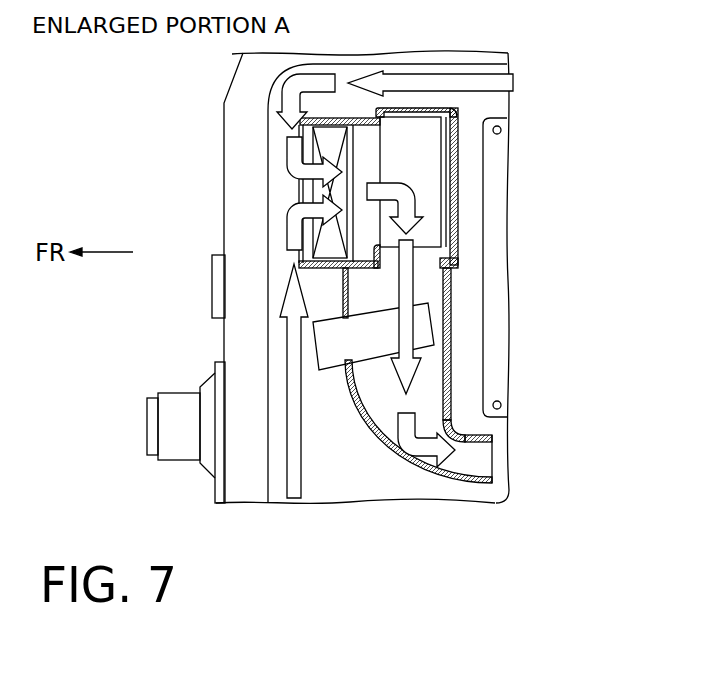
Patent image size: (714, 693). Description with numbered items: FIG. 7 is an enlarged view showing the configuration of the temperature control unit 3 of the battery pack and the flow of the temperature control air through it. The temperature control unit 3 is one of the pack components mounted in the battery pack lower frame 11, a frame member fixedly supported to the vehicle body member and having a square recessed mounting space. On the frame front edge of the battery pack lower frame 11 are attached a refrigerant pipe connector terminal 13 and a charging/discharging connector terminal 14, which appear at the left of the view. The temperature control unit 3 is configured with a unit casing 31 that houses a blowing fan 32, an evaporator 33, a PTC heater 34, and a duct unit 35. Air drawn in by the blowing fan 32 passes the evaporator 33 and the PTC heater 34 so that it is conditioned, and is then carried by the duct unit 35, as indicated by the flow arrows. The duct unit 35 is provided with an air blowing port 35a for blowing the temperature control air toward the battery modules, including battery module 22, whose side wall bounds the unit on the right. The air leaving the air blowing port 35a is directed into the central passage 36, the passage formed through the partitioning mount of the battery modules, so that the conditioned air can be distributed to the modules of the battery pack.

The temperature control unit 3 is at (460, 206).
The battery pack lower frame 11 is at (240, 93).
The refrigerant pipe connector terminal 13 is at (216, 300).
The charging/discharging connector terminal 14 is at (180, 402).
The battery module No. 2 22 is at (497, 258).
The unit casing 31 is at (407, 108).
The blowing fan 32 is at (410, 158).
The evaporator 33 is at (315, 190).
The PTC heater 34 is at (368, 340).
The duct unit 35 is at (450, 347).
The air blowing port 35a is at (508, 473).
The central passage 36 is at (498, 457).